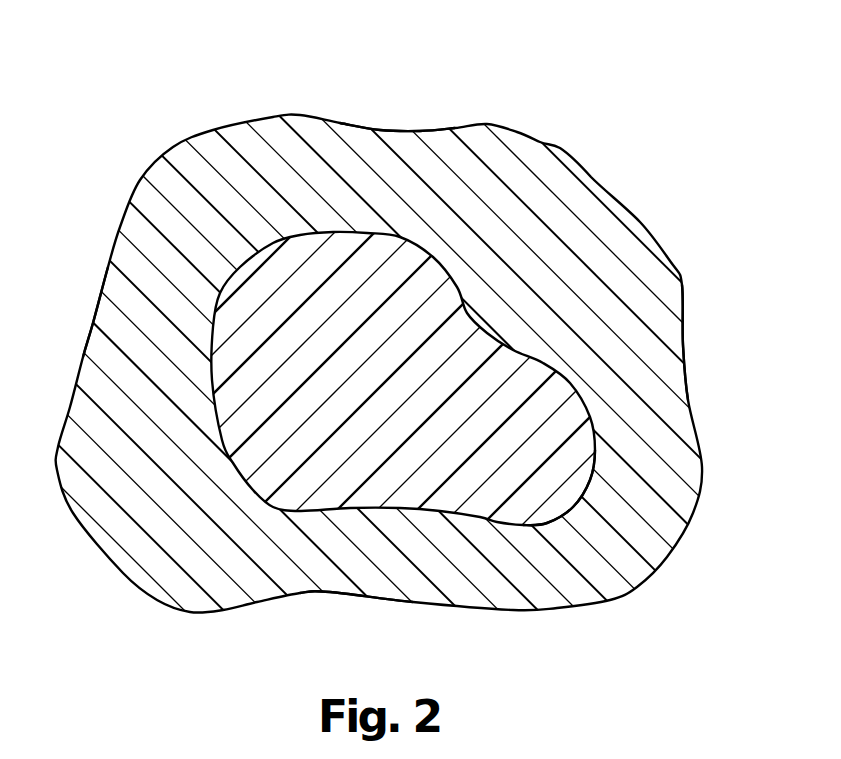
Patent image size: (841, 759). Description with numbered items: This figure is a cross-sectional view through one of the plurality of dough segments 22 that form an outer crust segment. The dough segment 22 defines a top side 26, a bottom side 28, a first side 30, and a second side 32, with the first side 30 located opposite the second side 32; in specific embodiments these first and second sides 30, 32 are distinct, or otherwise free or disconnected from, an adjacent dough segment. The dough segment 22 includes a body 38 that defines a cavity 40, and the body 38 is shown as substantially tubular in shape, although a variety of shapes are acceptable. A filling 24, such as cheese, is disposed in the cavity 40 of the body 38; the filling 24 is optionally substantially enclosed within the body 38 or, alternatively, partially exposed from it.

The dough segment 22 is at (545, 102).
The filling 24 is at (500, 370).
The top side 26 is at (380, 128).
The bottom side 28 is at (353, 594).
The first side 30 is at (684, 343).
The second side 32 is at (90, 327).
The body 38 is at (538, 202).
The cavity 40 is at (563, 532).